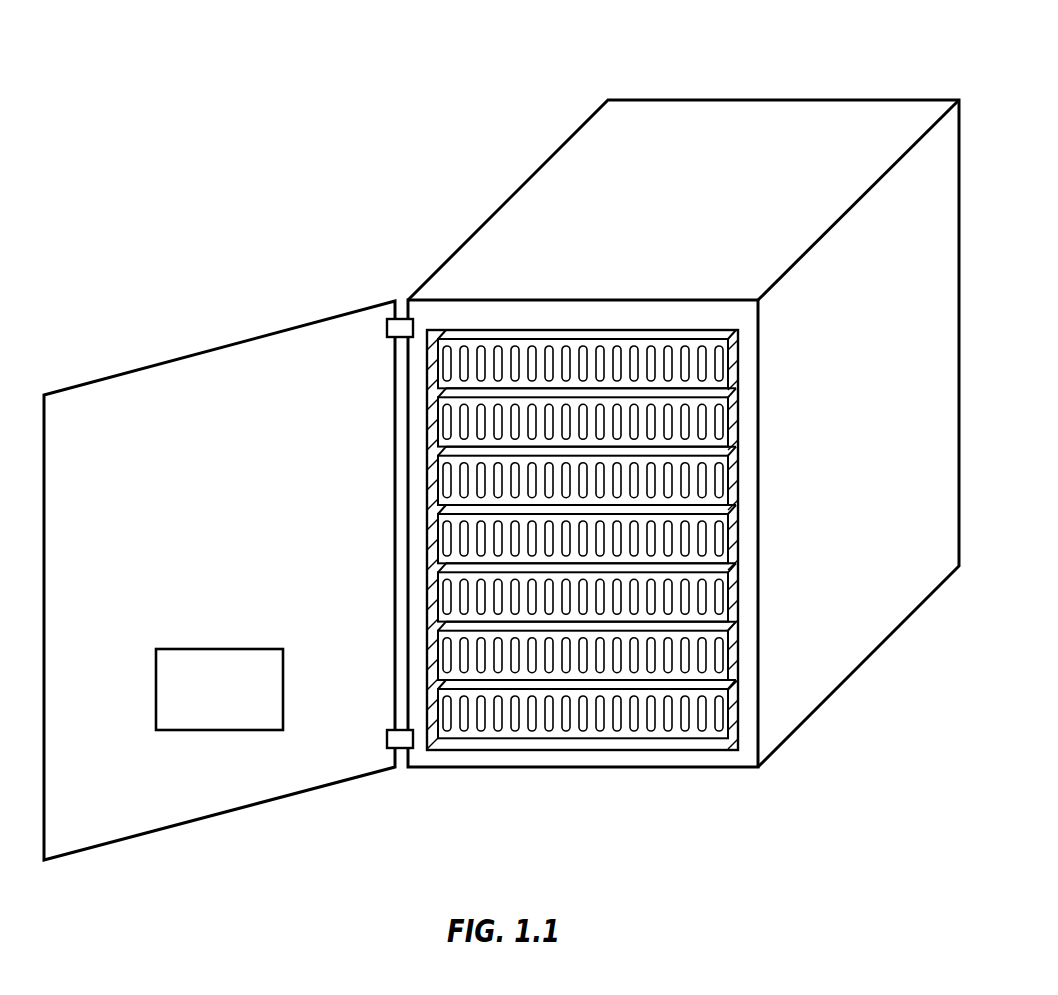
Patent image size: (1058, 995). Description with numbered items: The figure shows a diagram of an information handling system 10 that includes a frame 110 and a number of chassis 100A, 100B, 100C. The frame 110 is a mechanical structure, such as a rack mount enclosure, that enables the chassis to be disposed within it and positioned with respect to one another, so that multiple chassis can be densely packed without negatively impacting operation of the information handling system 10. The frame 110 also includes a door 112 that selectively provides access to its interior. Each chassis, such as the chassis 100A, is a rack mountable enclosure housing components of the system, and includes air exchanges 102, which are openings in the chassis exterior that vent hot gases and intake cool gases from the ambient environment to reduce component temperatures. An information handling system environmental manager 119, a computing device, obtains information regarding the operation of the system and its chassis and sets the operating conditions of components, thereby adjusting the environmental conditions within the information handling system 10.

The information handling system 10 is at (280, 98).
The frame 110 is at (508, 200).
The door 112 is at (222, 346).
The information handling system environmental manager 119 is at (222, 649).
The air exchange 102 is at (517, 350).
The chassis 100A is at (730, 357).
The chassis 100B is at (730, 417).
The chassis 100C is at (730, 475).